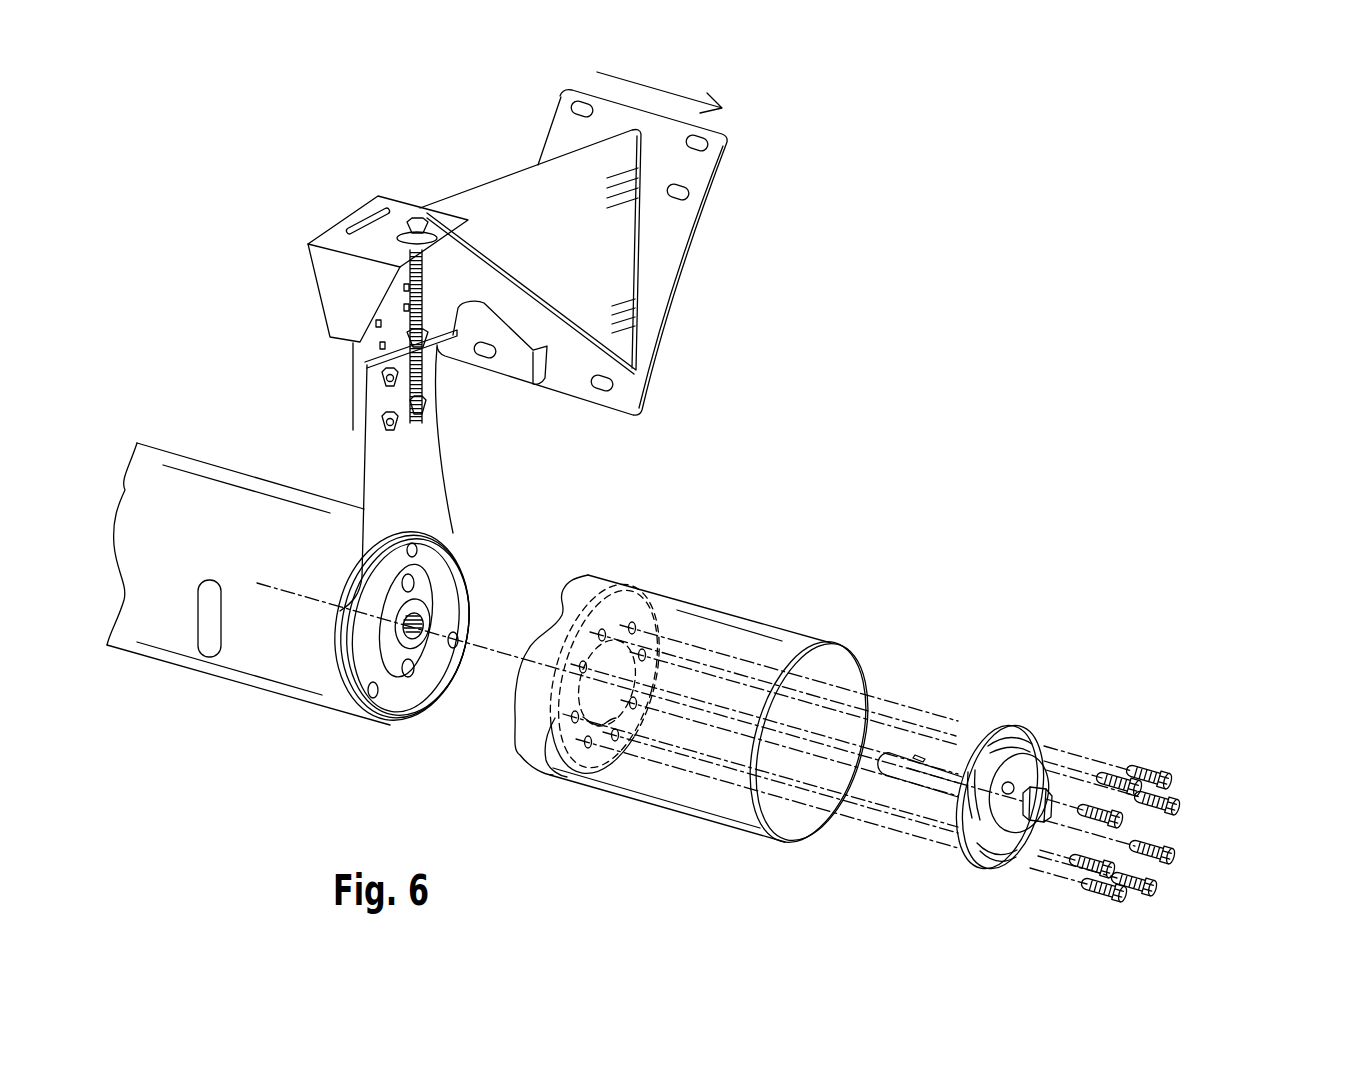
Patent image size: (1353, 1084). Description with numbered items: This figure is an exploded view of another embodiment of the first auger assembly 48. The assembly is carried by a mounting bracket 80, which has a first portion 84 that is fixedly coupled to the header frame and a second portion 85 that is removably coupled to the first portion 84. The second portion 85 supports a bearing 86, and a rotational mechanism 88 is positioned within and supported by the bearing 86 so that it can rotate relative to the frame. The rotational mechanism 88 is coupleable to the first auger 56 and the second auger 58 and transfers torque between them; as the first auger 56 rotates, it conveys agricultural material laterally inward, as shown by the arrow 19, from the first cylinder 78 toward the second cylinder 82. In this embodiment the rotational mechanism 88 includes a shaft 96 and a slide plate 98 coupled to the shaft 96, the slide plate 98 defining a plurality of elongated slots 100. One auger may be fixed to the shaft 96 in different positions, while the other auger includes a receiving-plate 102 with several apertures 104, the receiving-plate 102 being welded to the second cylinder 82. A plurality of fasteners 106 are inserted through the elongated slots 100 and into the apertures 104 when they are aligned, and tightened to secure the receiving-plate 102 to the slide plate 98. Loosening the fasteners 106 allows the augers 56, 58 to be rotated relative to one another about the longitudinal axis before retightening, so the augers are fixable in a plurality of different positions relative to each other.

The arrow 19 is at (660, 90).
The first auger assembly 48 is at (1024, 228).
The first auger 56 is at (212, 445).
The second auger 58 is at (760, 608).
The first cylinder 78 is at (235, 685).
The mounting bracket 80 is at (716, 195).
The second cylinder 82 is at (752, 838).
The first portion 84 is at (502, 197).
The second portion 85 is at (417, 477).
The bearing 86 is at (422, 617).
The rotational mechanism 88 is at (1045, 779).
The shaft 96 is at (903, 765).
The slide plate 98 is at (1033, 735).
The elongated slots 100 is at (993, 867).
The receiving-plate 102 is at (587, 765).
The apertures 104 is at (633, 610).
The fasteners 106 is at (1185, 807).